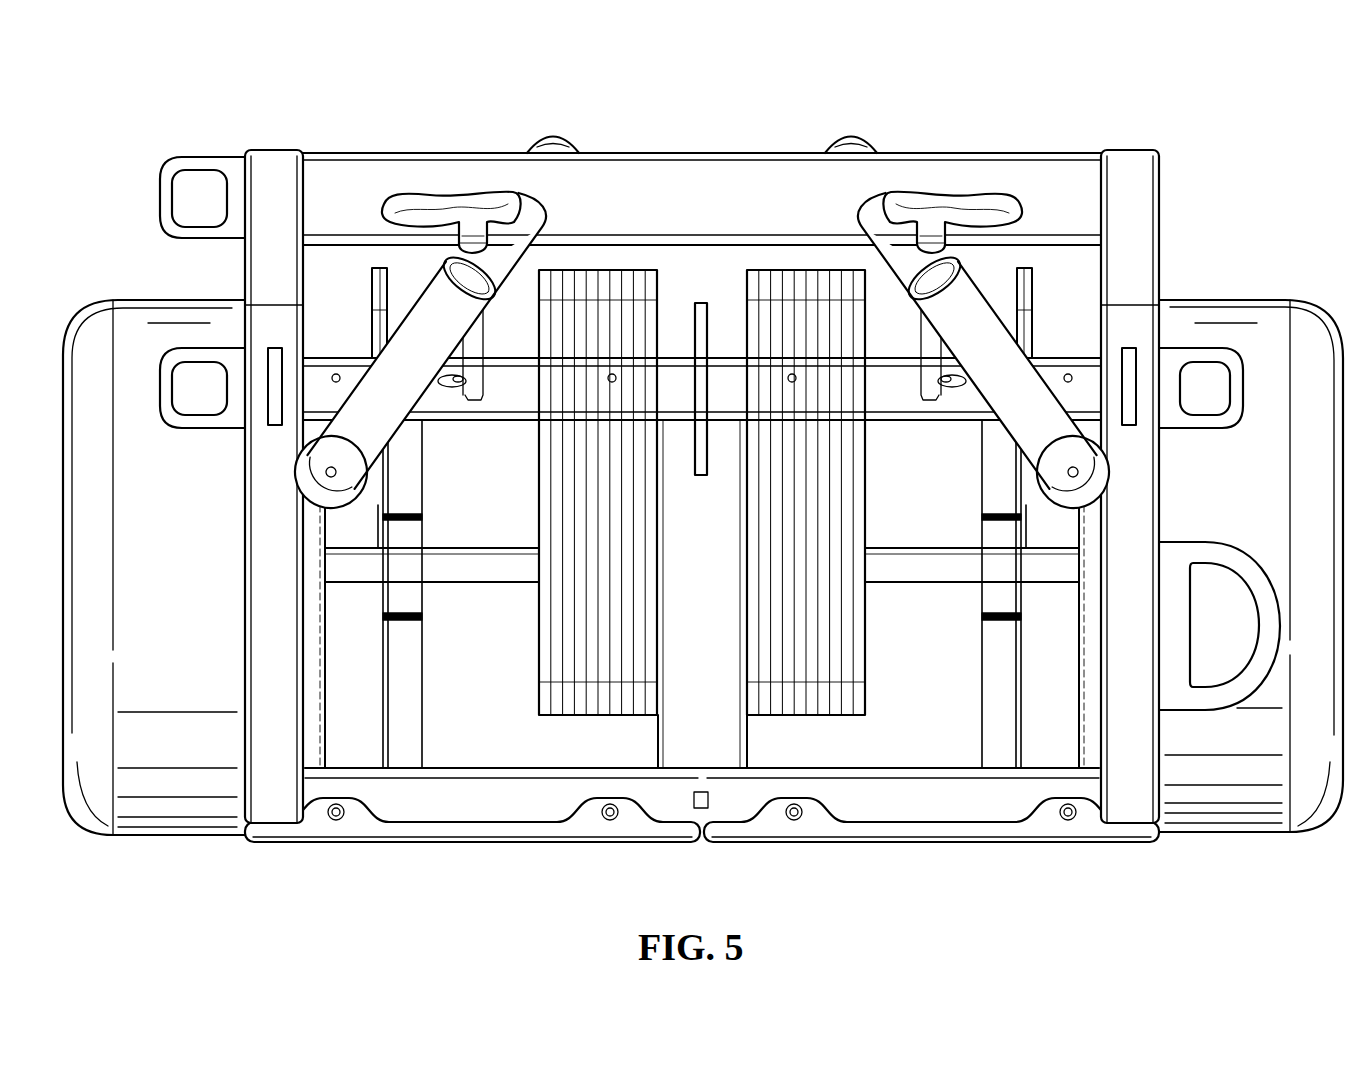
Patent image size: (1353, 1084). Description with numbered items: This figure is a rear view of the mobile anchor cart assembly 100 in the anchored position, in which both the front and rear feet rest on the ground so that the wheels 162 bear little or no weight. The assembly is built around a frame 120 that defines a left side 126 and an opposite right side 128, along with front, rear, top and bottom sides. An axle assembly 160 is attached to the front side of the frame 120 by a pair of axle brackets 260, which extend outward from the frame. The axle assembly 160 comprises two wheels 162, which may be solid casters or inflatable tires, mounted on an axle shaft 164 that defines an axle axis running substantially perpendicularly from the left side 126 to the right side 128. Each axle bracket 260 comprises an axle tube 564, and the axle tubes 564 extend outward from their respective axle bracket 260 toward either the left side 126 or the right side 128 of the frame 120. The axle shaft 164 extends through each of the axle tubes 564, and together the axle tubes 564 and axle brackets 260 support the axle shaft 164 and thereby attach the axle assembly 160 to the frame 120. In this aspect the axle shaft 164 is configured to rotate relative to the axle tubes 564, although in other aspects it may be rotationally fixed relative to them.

The mobile anchor cart assembly 100 is at (588, 98).
The frame 120 is at (1128, 172).
The left side 126 is at (243, 260).
The right side 128 is at (1160, 238).
The axle assembly 160 is at (138, 313).
The wheel 162 is at (177, 808).
The axle shaft 164 is at (923, 577).
The axle bracket 260 is at (413, 752).
The axle tube 564 is at (333, 577).